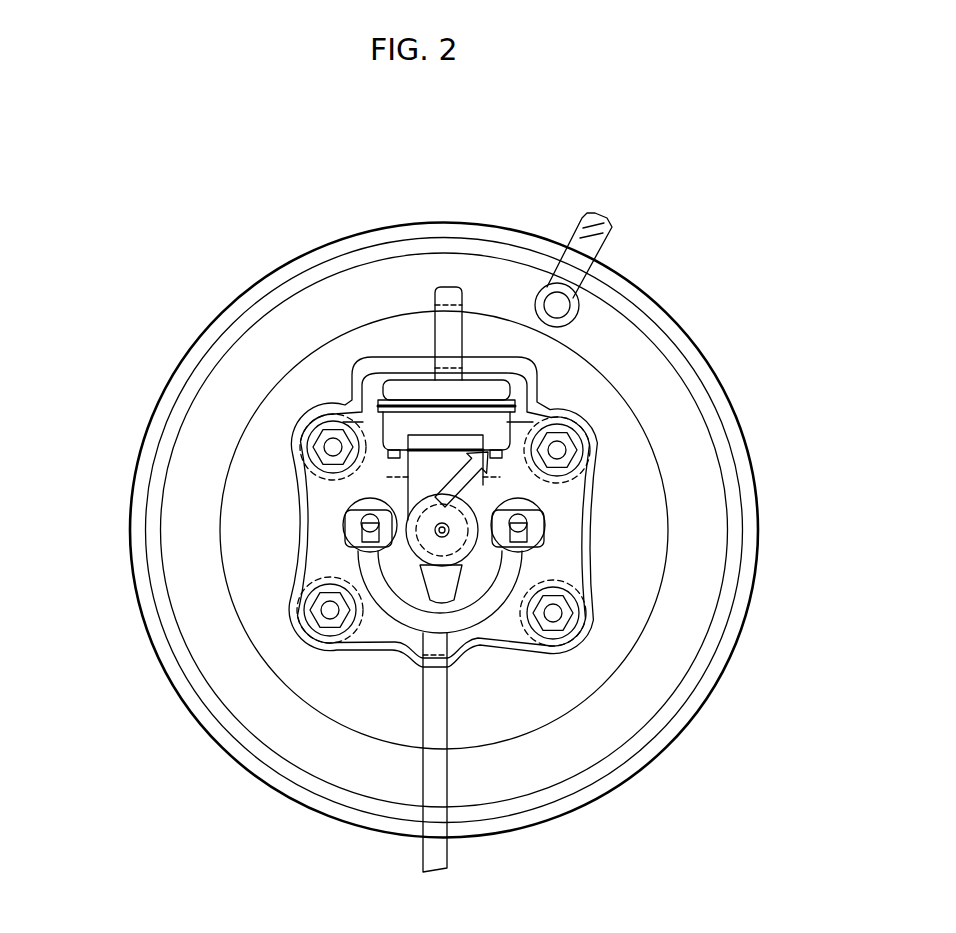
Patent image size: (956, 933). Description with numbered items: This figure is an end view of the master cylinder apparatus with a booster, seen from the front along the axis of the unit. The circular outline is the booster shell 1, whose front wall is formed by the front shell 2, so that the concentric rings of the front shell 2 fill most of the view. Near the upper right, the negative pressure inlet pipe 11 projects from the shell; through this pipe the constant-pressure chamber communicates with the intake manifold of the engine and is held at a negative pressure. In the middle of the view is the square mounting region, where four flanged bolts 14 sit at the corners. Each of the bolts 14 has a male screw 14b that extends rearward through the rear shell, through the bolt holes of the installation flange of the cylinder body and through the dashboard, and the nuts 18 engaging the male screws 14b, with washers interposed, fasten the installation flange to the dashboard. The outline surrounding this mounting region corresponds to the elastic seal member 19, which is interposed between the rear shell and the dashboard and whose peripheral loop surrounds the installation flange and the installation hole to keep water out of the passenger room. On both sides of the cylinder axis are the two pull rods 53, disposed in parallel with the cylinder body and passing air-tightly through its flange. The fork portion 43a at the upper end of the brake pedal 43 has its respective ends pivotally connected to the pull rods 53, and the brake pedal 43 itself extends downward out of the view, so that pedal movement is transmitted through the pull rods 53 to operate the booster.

The booster shell 1 is at (468, 222).
The front shell 2 is at (470, 557).
The negative pressure inlet pipe 11 is at (602, 228).
The flanged bolts 14 is at (327, 433).
The male screws 14b is at (443, 530).
The nuts 18 is at (333, 440).
The elastic seal member 19 is at (293, 465).
The brake pedal 43 is at (440, 858).
The fork portion 43a is at (405, 615).
The pull rods 53 is at (363, 522).